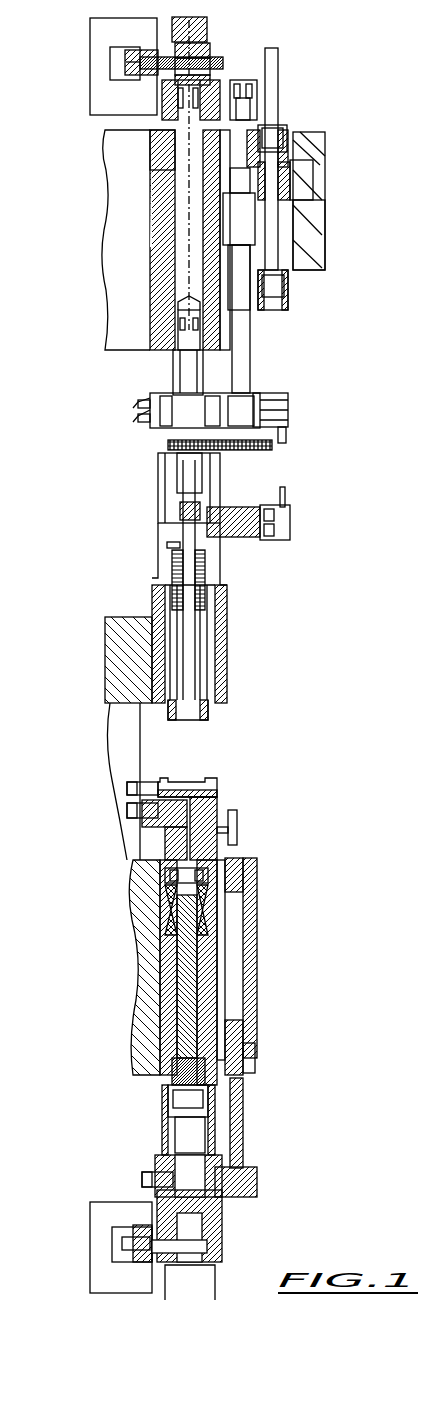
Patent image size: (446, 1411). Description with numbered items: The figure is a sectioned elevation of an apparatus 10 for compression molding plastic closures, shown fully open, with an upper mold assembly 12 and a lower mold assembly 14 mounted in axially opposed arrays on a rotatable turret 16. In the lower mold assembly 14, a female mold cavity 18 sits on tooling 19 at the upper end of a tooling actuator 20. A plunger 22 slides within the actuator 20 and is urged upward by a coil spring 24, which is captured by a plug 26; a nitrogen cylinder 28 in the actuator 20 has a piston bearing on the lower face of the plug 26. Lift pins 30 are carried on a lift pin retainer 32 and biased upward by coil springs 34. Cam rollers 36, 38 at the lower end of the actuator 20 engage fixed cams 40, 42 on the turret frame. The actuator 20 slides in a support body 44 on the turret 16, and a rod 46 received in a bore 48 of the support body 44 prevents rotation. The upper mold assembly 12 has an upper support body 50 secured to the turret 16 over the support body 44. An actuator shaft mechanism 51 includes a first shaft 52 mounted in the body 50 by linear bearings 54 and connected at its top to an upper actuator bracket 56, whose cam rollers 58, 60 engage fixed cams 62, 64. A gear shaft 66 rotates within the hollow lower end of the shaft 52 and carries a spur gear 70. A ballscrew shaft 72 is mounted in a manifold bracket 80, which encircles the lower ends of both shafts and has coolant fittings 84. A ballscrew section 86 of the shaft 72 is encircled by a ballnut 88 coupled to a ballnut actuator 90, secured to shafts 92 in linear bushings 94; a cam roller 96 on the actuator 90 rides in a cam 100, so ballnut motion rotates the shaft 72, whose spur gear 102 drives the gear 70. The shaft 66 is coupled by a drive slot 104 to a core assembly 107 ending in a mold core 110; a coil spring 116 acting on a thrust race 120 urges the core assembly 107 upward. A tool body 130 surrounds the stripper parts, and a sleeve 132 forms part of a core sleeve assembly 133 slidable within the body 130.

The apparatus 10 is at (58, 518).
The first or upper mold assembly 12 is at (70, 298).
The second or lower mold assembly 14 is at (314, 855).
The rotatable turret 16 is at (110, 338).
The female mold cavity 18 is at (215, 778).
The tooling 19 is at (212, 806).
The tooling actuator 20 is at (210, 960).
The plunger 22 is at (192, 983).
The coil spring 24 is at (250, 1032).
The plug 26 is at (200, 1078).
The nitrogen cylinder 28 is at (195, 1135).
The lift pins 30 is at (222, 858).
The lift pin retainer 32 is at (170, 876).
The coil springs 34 is at (205, 915).
The cam roller 36 is at (195, 1236).
The cam roller 38 is at (142, 1215).
The fixed cam 40 is at (205, 1282).
The fixed cam 42 is at (90, 1230).
The support body 44 is at (118, 685).
The rod 46 is at (243, 1130).
The bore 48 is at (240, 995).
The upper bracket or support body 50 is at (152, 258).
The actuator shaft mechanism 51 is at (165, 185).
The first shaft 52 is at (180, 212).
The linear bearings 54 is at (160, 165).
The upper actuator bracket 56 is at (218, 90).
The cam roller 58 is at (212, 52).
The cam roller 60 is at (130, 75).
The fixed cam 62 is at (205, 32).
The fixed cam 64 is at (90, 38).
The gear shaft 66 is at (185, 370).
The spur gear 70 is at (168, 445).
The second or ballscrew shaft 72 is at (250, 370).
The manifold bracket 80 is at (255, 398).
The fittings 84 is at (288, 432).
The ballscrew section 86 is at (240, 287).
The ballnut 88 is at (242, 218).
The ballnut actuator 90 is at (300, 180).
The laterally spaced shafts 92 is at (280, 70).
The linear bushings 94 is at (280, 135).
The cam roller 96 is at (300, 152).
The cam 100 is at (310, 205).
The spur gear 102 is at (272, 446).
The drive slot 104 is at (177, 470).
The core assembly 107 is at (186, 646).
The mold core 110 is at (210, 718).
The coil spring 116 is at (205, 572).
The thrust race 120 is at (167, 545).
The tool body 130 is at (222, 632).
The sleeve 132 is at (180, 512).
The core sleeve assembly 133 is at (222, 574).